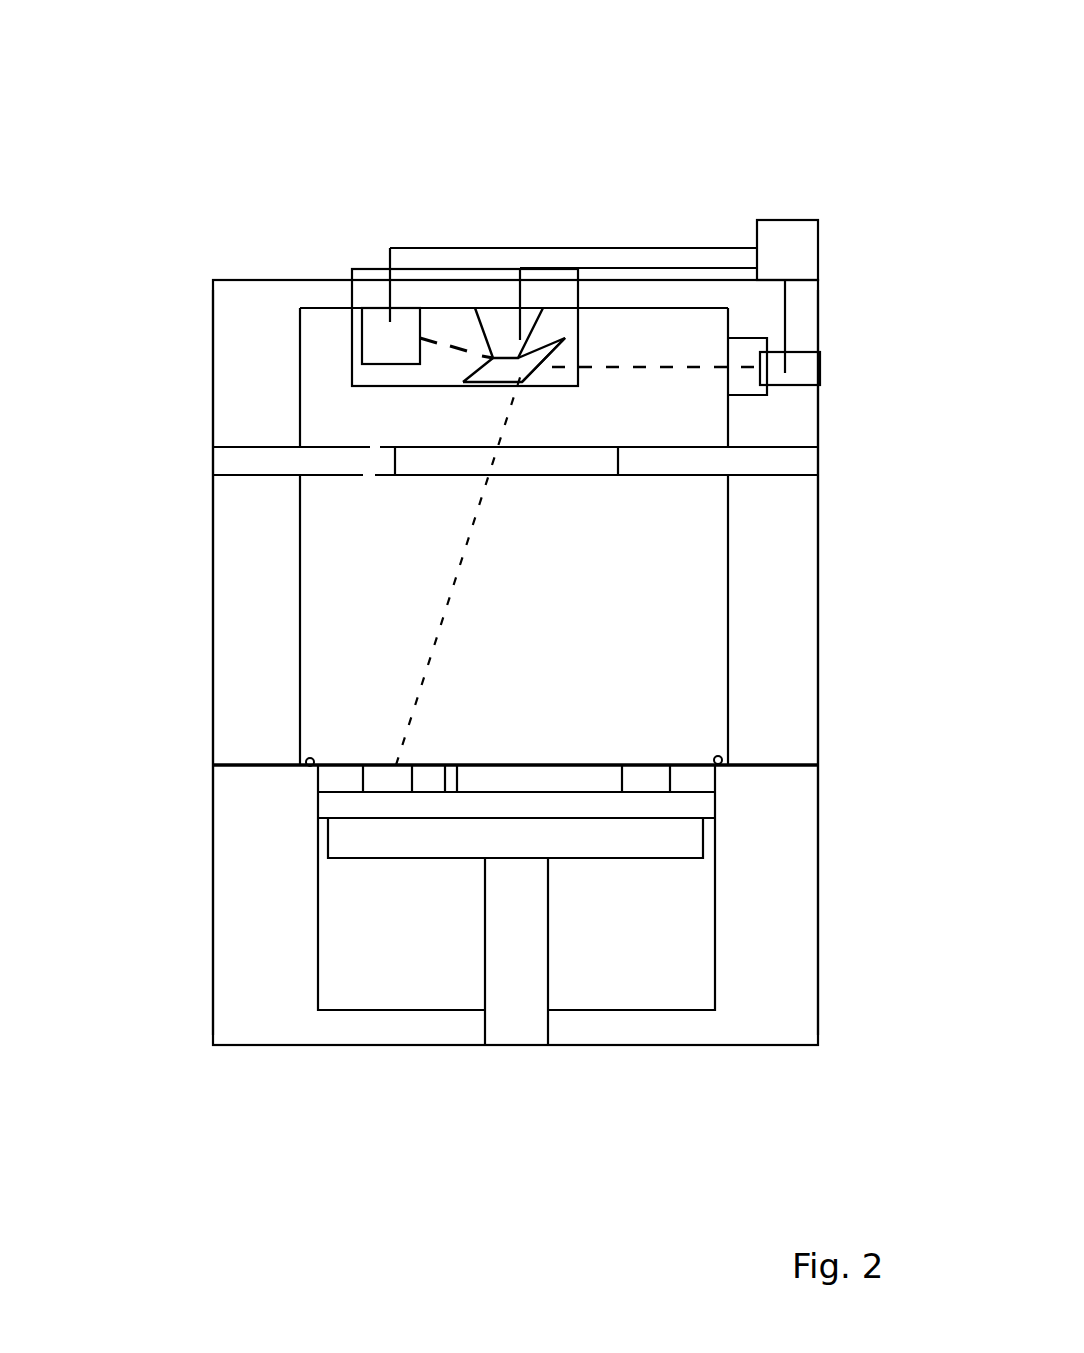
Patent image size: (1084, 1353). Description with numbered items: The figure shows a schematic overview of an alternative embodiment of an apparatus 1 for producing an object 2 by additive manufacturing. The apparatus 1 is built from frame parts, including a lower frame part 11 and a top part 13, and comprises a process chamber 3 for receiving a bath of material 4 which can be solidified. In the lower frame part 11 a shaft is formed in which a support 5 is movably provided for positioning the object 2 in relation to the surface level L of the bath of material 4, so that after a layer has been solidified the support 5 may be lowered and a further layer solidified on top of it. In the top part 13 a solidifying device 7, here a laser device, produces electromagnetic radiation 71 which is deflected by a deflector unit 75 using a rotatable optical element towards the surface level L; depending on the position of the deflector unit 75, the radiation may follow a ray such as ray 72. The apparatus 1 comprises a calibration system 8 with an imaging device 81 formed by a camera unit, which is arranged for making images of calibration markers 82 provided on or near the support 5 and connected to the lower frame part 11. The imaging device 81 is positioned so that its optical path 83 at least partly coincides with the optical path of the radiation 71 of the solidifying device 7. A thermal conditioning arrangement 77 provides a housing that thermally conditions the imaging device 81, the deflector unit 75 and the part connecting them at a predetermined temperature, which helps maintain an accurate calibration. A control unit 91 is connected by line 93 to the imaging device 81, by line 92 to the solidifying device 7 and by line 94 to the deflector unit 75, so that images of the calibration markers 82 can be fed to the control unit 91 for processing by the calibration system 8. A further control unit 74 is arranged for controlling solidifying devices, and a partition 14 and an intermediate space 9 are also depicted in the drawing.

The apparatus 1 is at (247, 222).
The object 2 is at (640, 783).
The process chamber 3 is at (673, 692).
The bath of material 4 is at (540, 770).
The support 5 is at (642, 879).
The solidifying device 7 is at (800, 373).
The calibration system 8 is at (437, 222).
The intermediate space 9 is at (850, 662).
The lower frame part 11 is at (228, 940).
The top part 13 is at (225, 360).
The partition plate 14 is at (329, 457).
The electromagnetic radiation 71 is at (643, 363).
The ray 72 is at (462, 583).
The control unit 74 is at (505, 325).
The deflector unit 75 is at (527, 362).
The thermal conditioning arrangement 77 is at (580, 385).
The imaging device 81 is at (375, 333).
The calibration markers 82 is at (714, 757).
The optical path 83 is at (448, 350).
The control unit 91 is at (788, 235).
The line 92 is at (787, 315).
The line 93 is at (715, 253).
The line 94 is at (533, 262).
The surface level L is at (513, 763).